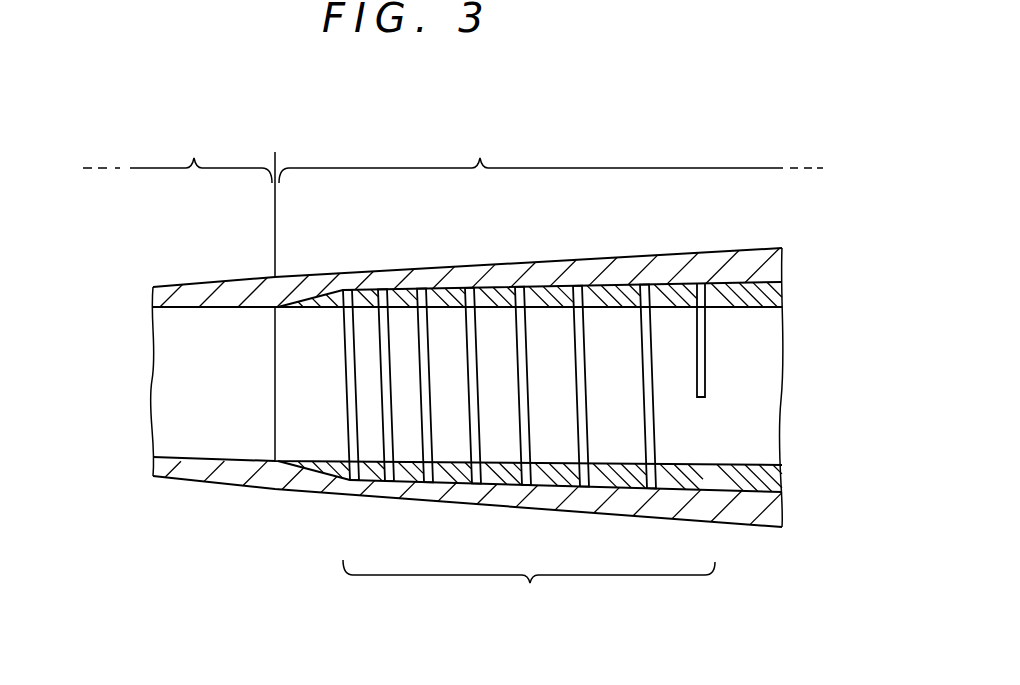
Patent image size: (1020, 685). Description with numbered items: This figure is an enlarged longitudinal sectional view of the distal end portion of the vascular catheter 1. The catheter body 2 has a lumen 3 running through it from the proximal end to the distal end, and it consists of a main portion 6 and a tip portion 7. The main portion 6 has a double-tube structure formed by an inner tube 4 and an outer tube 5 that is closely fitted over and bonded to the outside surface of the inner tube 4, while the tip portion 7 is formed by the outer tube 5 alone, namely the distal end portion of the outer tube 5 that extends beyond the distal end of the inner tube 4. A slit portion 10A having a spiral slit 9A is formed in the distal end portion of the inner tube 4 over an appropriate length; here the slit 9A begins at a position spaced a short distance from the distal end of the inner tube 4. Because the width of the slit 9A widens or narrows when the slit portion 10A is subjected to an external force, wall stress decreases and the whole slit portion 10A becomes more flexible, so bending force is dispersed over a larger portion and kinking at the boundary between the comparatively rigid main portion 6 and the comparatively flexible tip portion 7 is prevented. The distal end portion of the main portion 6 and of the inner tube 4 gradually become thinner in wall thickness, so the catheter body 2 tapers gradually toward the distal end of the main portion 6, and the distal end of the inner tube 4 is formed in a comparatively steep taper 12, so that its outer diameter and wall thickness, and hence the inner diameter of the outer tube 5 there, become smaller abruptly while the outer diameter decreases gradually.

The vascular catheter 1 is at (712, 158).
The catheter body 2 is at (713, 249).
The lumen 3 is at (188, 366).
The inner tube 4 is at (750, 481).
The outer tube 5 is at (203, 473).
The main portion 6 is at (551, 153).
The tip portion 7 is at (179, 292).
The spiral slit 9A is at (583, 363).
The slit portion 10A is at (529, 590).
The taper 12 is at (300, 290).